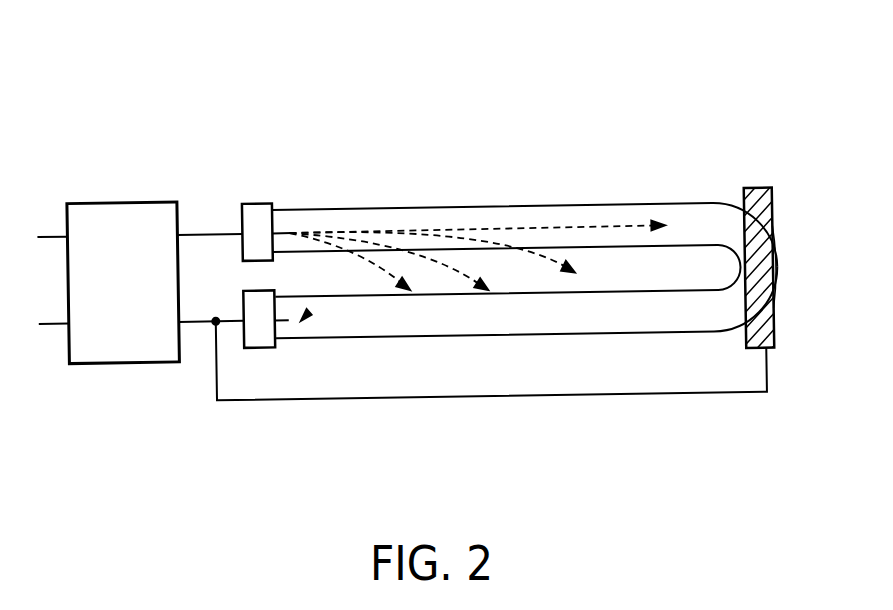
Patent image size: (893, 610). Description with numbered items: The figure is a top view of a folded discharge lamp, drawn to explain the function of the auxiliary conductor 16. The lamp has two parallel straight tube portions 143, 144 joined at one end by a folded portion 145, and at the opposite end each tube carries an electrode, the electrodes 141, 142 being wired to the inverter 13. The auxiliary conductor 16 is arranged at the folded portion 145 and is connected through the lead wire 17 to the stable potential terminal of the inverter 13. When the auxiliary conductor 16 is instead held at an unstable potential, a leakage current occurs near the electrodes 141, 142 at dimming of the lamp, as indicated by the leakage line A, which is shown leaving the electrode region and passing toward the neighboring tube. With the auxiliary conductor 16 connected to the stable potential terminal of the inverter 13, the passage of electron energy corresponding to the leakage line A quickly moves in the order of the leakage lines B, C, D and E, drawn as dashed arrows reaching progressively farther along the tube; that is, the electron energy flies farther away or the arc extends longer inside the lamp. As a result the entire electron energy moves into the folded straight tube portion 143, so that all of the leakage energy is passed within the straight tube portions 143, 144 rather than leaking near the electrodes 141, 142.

The inverter 13 is at (122, 197).
The electrode 141 is at (290, 229).
The electrode 142 is at (285, 315).
The straight tube portion 143 is at (530, 207).
The straight tube portion 144 is at (538, 336).
The auxiliary conductor 16 is at (762, 194).
The folded portion 145 is at (780, 268).
The lead wire 17 is at (478, 396).
The leakage line A is at (306, 306).
The leakage line B is at (387, 263).
The leakage line C is at (455, 280).
The leakage line D is at (571, 268).
The leakage line E is at (650, 227).